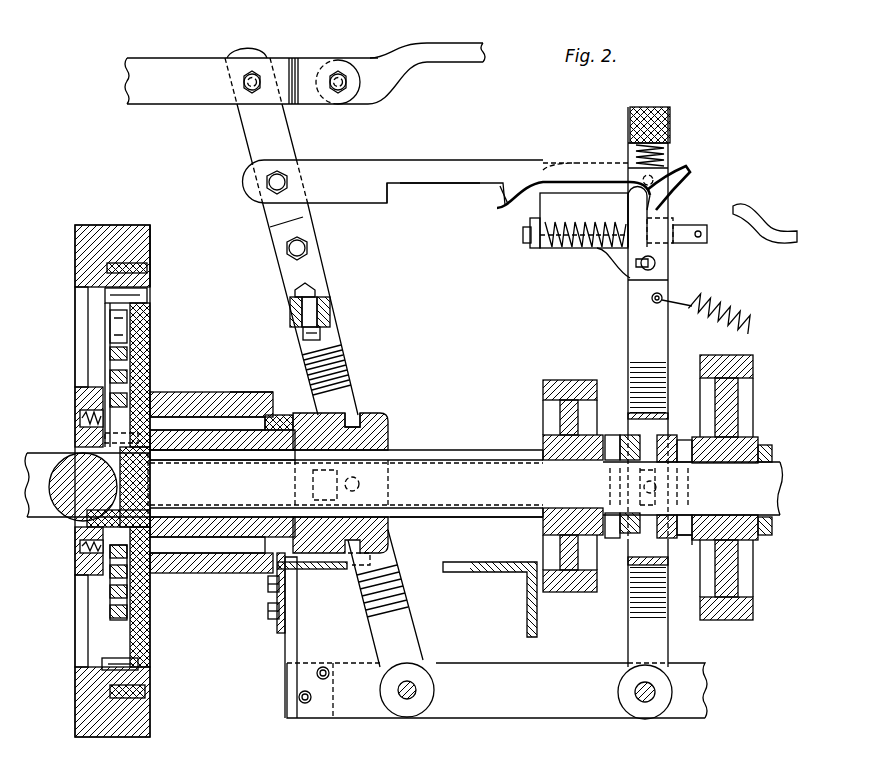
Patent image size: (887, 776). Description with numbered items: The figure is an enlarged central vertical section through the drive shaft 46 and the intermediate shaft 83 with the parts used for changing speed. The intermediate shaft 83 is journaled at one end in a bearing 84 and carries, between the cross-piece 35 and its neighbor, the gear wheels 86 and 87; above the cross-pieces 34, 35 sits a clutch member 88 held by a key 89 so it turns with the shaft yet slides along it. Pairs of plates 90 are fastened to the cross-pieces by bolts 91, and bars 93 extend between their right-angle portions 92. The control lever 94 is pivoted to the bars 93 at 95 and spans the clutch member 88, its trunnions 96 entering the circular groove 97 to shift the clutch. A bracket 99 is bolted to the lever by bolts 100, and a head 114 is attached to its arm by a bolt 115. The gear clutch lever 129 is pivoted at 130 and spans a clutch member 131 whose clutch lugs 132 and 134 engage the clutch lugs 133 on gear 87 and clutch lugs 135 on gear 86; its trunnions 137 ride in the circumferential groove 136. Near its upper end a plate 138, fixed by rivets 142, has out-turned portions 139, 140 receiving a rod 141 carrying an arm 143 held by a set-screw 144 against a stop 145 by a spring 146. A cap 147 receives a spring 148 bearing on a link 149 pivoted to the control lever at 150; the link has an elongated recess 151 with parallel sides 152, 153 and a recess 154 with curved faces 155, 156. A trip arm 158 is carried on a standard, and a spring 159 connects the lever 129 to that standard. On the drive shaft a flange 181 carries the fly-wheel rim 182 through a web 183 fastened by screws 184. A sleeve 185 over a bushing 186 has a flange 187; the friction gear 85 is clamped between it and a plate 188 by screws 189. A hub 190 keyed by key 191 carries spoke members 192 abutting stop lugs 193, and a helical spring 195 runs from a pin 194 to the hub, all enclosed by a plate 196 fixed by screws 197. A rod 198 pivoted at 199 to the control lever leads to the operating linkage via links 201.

The cross-piece 34 is at (322, 570).
The cross-piece 35 is at (507, 572).
The drive shaft 46 is at (101, 487).
The intermediate shaft 83 is at (346, 484).
The bearing 84 is at (465, 450).
The friction gear 85 is at (246, 392).
The gear wheel 86 is at (572, 380).
The gear wheel 87 is at (752, 372).
The clutch member 88 is at (392, 436).
The key 89 is at (474, 517).
The plates 90 is at (296, 643).
The bolts 91 is at (267, 615).
The portions 92 is at (335, 700).
The bars 93 is at (497, 690).
The control lever 94 is at (256, 142).
The pivot 95 is at (410, 700).
The trunnions 96 is at (360, 484).
The circular groove 97 is at (356, 420).
The bracket 99 is at (318, 266).
The bolts 100 is at (305, 245).
The head 114 is at (320, 293).
The bolt 115 is at (322, 333).
The gear clutch lever 129 is at (628, 323).
The pivot 130 is at (647, 703).
The clutch member 131 is at (670, 435).
The clutch lugs 132 is at (674, 528).
The clutch lugs 133 is at (691, 558).
The clutch lugs 134 is at (628, 436).
The clutch lugs 135 is at (612, 435).
The circumferential groove 136 is at (650, 540).
The trunnions 137 is at (656, 490).
The plate 138 is at (545, 200).
The out-turned portion 139 is at (533, 248).
The out-turned portion 140 is at (670, 220).
The rod 141 is at (523, 236).
The rivets 142 is at (655, 178).
The arm 143 is at (628, 198).
The set-screw 144 is at (634, 270).
The stop 145 is at (660, 217).
The spring 146 is at (572, 248).
The cap 147 is at (630, 110).
The spring 148 is at (636, 150).
The link 149 is at (432, 160).
The pivot 150 is at (284, 177).
The elongated recess 151 is at (440, 191).
The side 152 is at (387, 200).
The side 153 is at (503, 200).
The recess 154 is at (550, 178).
The curved face 155 is at (522, 195).
The curved face 156 is at (649, 195).
The trip arm 158 is at (760, 212).
The spring 159 is at (737, 318).
The flange 181 is at (80, 398).
The fly-wheel rim 182 is at (102, 225).
The web 183 is at (88, 313).
The screws 184 is at (80, 418).
The sleeve 185 is at (212, 450).
The bushing 186 is at (247, 460).
The flange 187 is at (283, 413).
The plate 188 is at (160, 392).
The screws 189 is at (207, 423).
The hub 190 is at (103, 533).
The key 191 is at (122, 443).
The spoke members 192 is at (135, 310).
The stop lugs 193 is at (120, 293).
The pin 194 is at (110, 333).
The helical spring 195 is at (118, 332).
The plate 196 is at (165, 617).
The screws 197 is at (152, 262).
The rod 198 is at (165, 58).
The pivot 199 is at (258, 76).
The links 201 is at (452, 45).